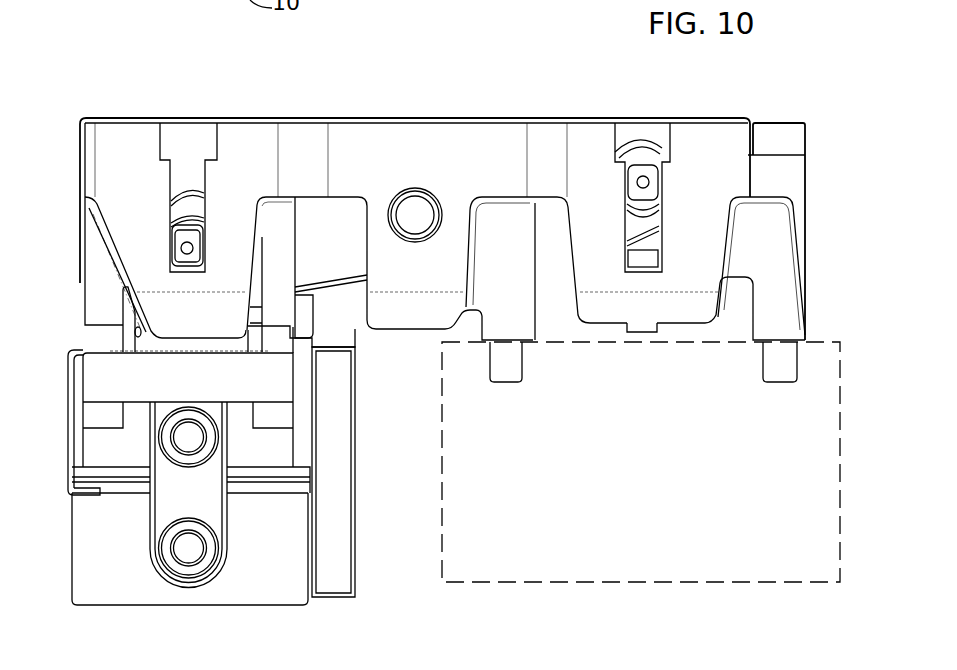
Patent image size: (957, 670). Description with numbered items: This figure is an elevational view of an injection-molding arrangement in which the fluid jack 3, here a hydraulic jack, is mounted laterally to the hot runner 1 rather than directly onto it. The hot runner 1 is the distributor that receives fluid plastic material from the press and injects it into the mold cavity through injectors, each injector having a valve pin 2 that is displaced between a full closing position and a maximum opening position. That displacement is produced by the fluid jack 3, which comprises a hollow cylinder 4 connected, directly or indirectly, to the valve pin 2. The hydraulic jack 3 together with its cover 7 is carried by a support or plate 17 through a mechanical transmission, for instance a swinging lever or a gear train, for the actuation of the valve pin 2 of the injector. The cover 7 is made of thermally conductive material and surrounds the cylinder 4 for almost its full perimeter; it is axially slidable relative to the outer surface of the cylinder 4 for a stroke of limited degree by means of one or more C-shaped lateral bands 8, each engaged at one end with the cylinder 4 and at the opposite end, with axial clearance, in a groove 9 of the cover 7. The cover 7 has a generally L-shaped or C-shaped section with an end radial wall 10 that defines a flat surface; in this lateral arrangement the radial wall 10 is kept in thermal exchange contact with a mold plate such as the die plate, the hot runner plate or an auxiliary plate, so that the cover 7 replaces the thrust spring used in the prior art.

The hot runner 1 is at (815, 548).
The valve pin 2 is at (640, 332).
The fluid jack 3 is at (98, 456).
The hollow cylinder 4 is at (172, 490).
The cover 7 is at (64, 533).
The C-shaped lateral band 8 is at (67, 370).
The groove 9 is at (250, 486).
The end radial wall 10 is at (233, 606).
The support or plate 17 is at (448, 117).